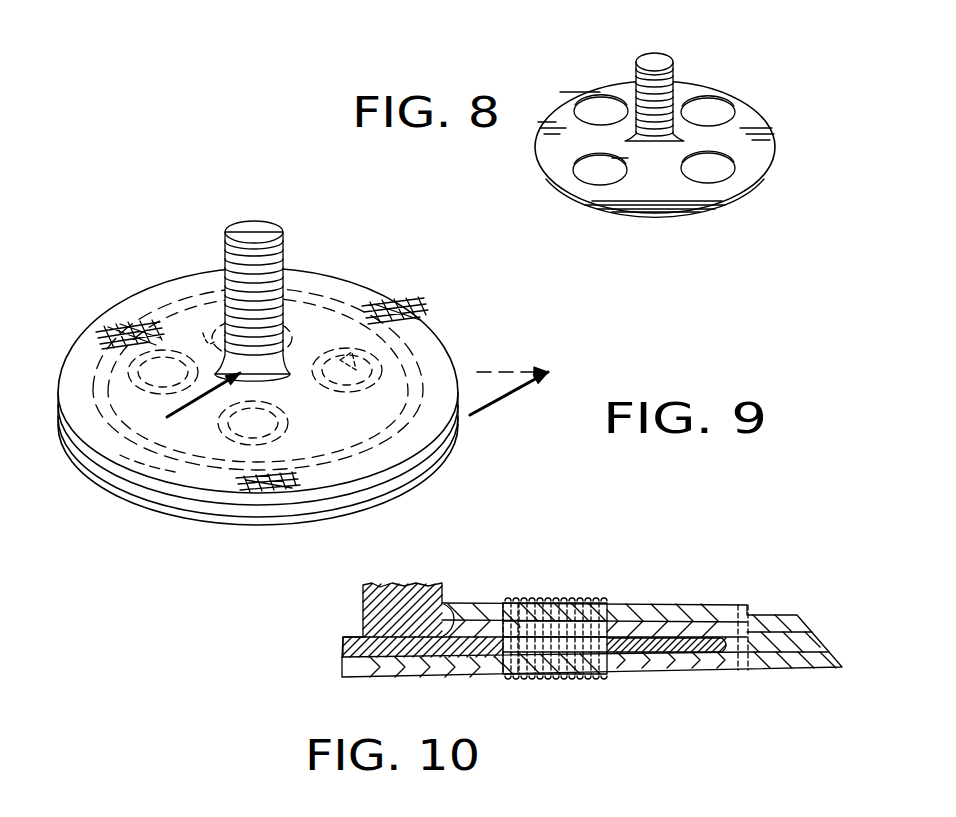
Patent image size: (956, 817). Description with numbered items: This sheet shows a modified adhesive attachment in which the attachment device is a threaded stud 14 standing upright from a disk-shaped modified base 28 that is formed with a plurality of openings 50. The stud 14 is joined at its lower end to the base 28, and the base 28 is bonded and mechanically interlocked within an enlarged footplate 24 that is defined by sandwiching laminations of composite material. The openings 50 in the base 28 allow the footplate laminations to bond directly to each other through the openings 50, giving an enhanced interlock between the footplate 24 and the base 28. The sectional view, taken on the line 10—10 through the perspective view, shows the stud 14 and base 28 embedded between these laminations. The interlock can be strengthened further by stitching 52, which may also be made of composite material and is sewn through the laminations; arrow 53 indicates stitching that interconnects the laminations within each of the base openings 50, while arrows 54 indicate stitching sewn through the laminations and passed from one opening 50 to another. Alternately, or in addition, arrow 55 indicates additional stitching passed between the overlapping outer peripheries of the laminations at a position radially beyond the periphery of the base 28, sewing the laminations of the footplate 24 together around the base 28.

In FIG. 9, the section line 10 is at (357, 407).
In FIG. 8, the threaded stud 14 is at (672, 70).
In FIG. 9, the threaded stud 14 is at (278, 260).
In FIG. 10, the threaded stud 14 is at (410, 585).
In FIG. 9, the footplate 24 is at (445, 345).
In FIG. 10, the footplate 24 is at (680, 600).
In FIG. 8, the modified base 28 is at (748, 182).
In FIG. 10, the modified base 28 is at (438, 677).
In FIG. 8, the openings 50 is at (735, 112).
In FIG. 10, the openings 50 is at (615, 640).
In FIG. 9, the stitching 52 is at (298, 394).
In FIG. 10, the stitching 52 is at (525, 600).
In FIG. 9, the arrow 53 is at (352, 352).
In FIG. 9, the arrows 54 is at (206, 337).
In FIG. 9, the arrow 55 is at (172, 455).